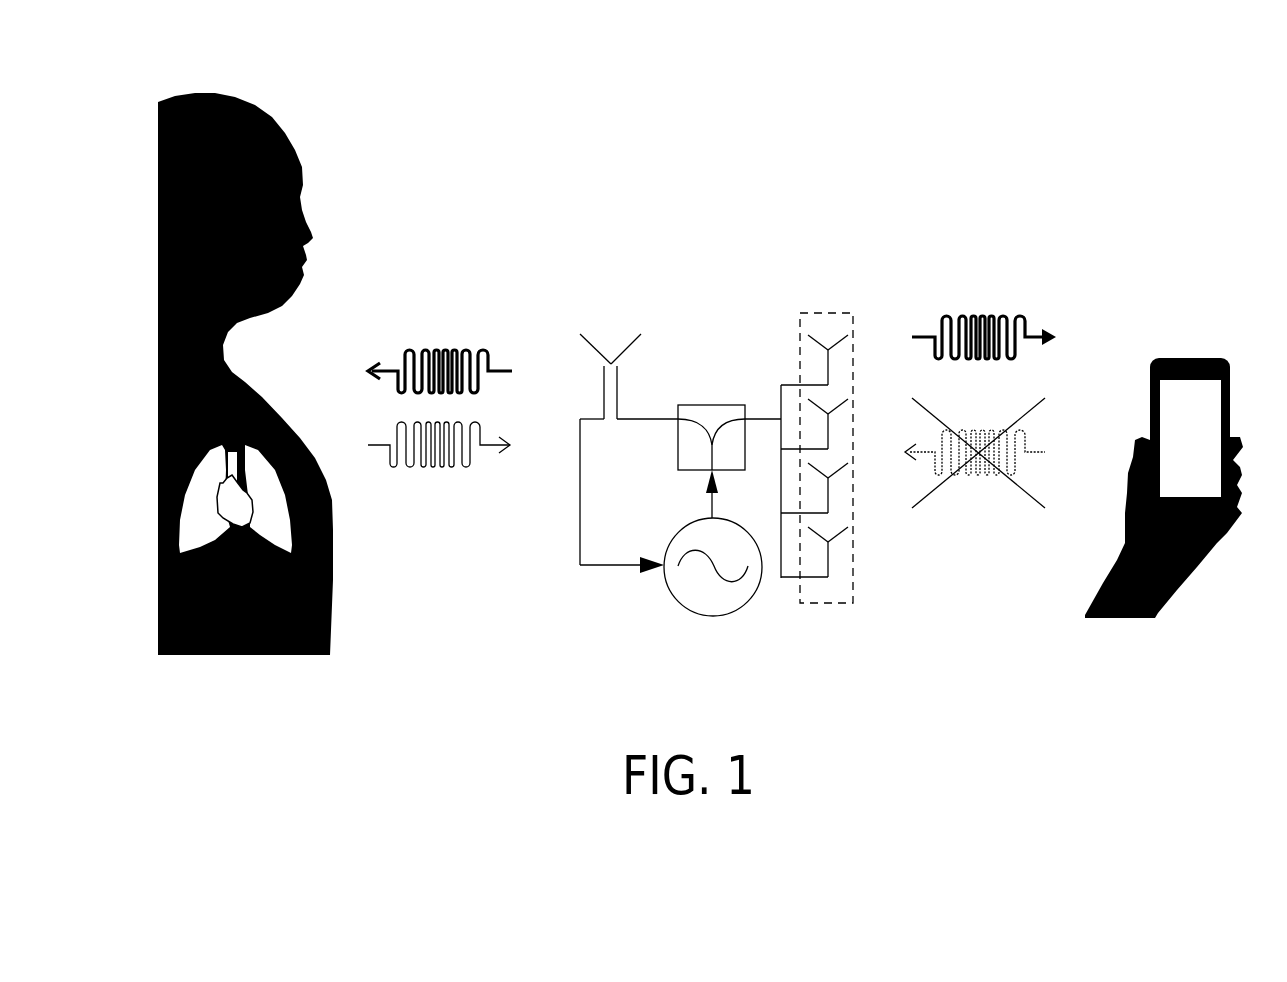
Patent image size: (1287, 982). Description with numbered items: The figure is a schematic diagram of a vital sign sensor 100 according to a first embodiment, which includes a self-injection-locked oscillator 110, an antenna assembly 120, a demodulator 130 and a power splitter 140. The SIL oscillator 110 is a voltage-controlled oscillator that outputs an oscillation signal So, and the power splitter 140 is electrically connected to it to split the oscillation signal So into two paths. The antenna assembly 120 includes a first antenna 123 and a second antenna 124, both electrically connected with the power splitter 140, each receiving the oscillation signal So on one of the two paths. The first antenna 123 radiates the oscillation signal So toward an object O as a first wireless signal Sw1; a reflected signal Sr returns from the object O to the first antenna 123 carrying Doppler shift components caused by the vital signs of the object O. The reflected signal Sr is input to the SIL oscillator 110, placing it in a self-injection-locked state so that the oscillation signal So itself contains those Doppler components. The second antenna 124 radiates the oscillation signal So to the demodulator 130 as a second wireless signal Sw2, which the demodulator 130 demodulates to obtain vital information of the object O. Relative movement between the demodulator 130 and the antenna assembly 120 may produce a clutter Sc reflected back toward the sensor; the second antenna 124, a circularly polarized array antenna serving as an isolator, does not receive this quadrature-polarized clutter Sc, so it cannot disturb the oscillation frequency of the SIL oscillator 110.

The object O is at (303, 155).
The vital sign sensor 100 is at (498, 148).
The self-injection-locked (SIL) oscillator 110 is at (713, 616).
The antenna assembly 120 is at (725, 240).
The first antenna 123 is at (593, 342).
The second antenna 124 is at (838, 310).
The demodulator 130 is at (1197, 357).
The power splitter 140 is at (712, 403).
The first wireless signal Sw1 is at (440, 350).
The reflected signal Sr is at (438, 468).
The second wireless signal Sw2 is at (978, 315).
The clutter Sc is at (970, 475).
The oscillation signal So is at (733, 494).